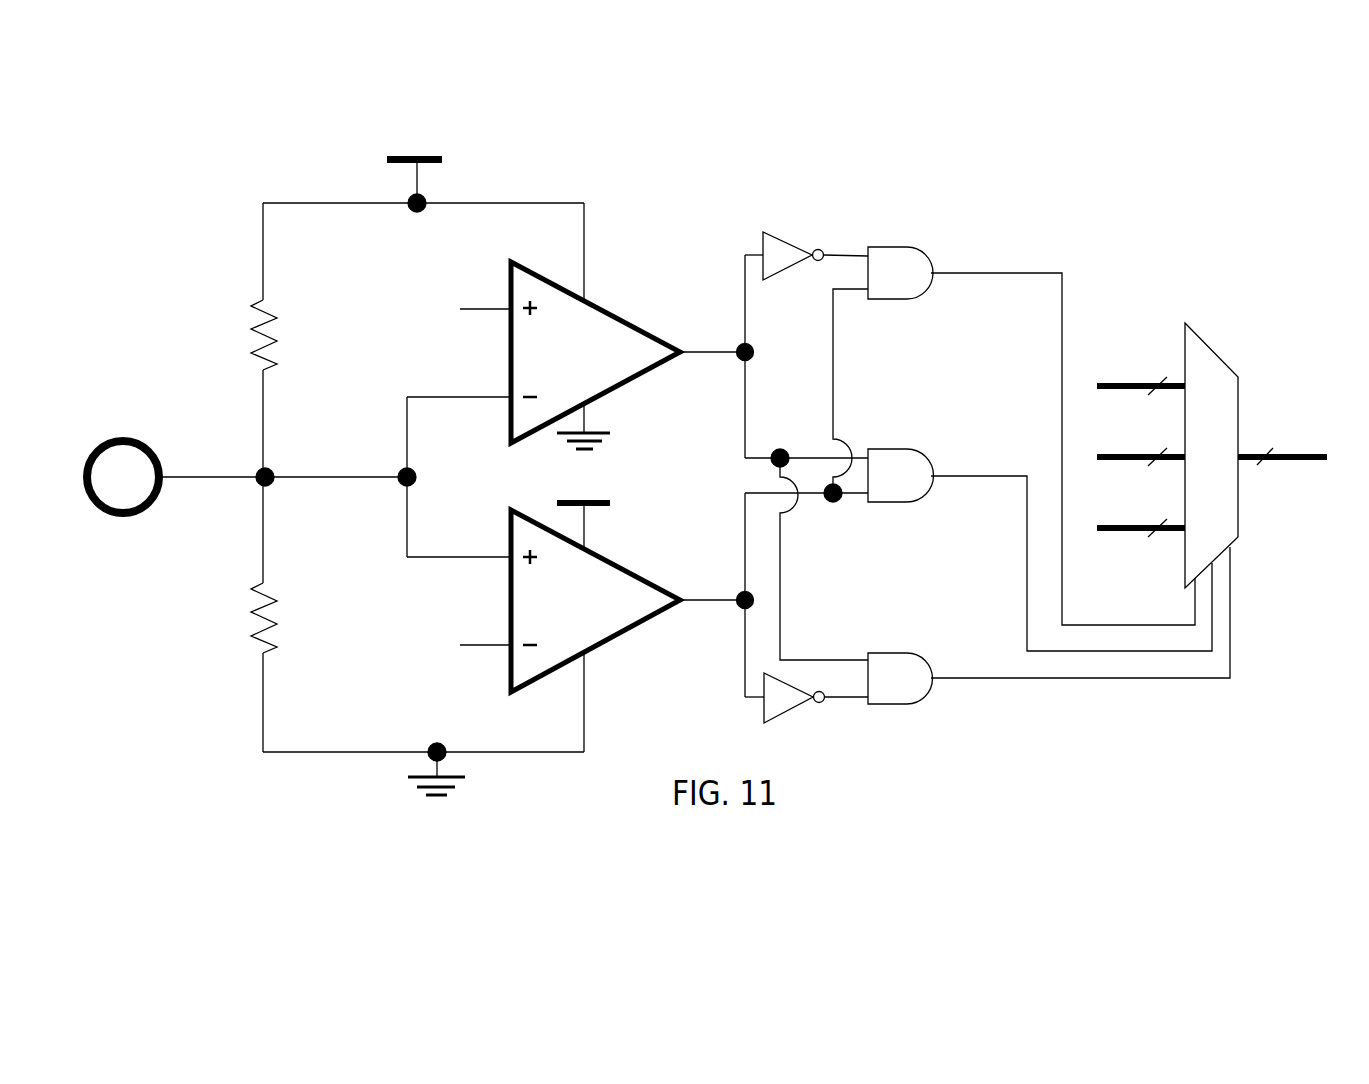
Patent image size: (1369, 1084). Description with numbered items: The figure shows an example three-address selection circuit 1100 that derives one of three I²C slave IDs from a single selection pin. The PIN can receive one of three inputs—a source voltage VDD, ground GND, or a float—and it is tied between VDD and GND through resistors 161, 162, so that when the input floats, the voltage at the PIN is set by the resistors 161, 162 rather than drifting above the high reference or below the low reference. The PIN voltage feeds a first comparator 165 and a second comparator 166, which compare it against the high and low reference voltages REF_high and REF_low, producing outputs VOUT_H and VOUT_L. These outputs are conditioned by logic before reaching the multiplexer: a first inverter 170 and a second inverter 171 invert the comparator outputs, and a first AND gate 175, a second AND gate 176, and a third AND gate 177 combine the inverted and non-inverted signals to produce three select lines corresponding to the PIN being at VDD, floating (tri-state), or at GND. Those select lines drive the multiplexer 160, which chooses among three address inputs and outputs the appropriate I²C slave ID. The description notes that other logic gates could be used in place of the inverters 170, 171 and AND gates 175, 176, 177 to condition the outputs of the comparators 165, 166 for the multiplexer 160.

The three-address selection circuit 1100 is at (1187, 235).
The multiplexer 160 is at (1235, 540).
The resistor 161 is at (270, 370).
The resistor 162 is at (270, 653).
The first comparator 165 is at (618, 383).
The second comparator 166 is at (612, 638).
The first inverter 170 is at (782, 267).
The second inverter 171 is at (783, 713).
The first AND gate 175 is at (887, 300).
The second AND gate 176 is at (887, 502).
The third AND gate 177 is at (887, 704).